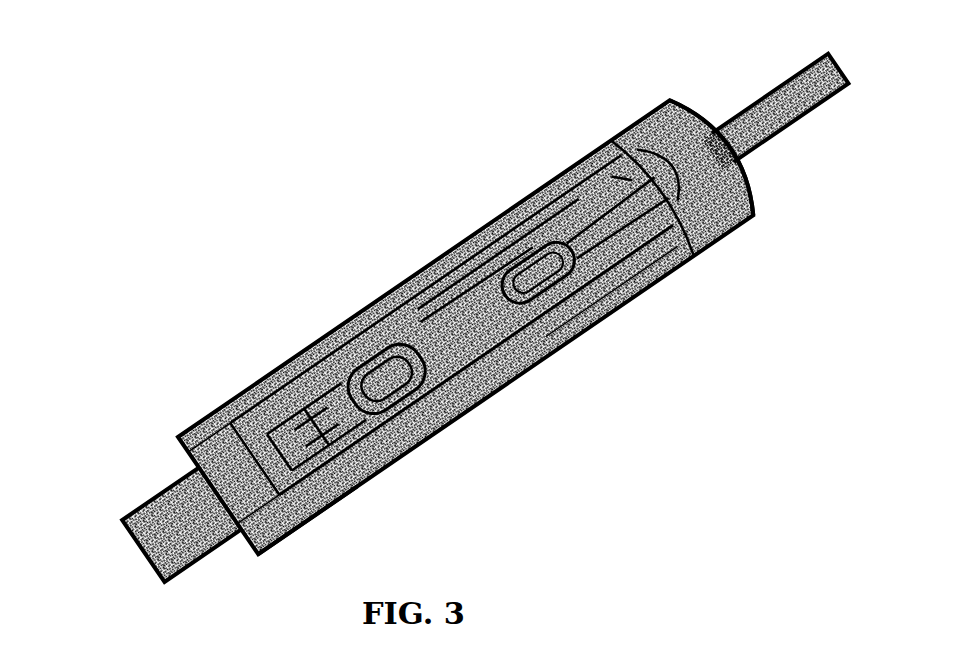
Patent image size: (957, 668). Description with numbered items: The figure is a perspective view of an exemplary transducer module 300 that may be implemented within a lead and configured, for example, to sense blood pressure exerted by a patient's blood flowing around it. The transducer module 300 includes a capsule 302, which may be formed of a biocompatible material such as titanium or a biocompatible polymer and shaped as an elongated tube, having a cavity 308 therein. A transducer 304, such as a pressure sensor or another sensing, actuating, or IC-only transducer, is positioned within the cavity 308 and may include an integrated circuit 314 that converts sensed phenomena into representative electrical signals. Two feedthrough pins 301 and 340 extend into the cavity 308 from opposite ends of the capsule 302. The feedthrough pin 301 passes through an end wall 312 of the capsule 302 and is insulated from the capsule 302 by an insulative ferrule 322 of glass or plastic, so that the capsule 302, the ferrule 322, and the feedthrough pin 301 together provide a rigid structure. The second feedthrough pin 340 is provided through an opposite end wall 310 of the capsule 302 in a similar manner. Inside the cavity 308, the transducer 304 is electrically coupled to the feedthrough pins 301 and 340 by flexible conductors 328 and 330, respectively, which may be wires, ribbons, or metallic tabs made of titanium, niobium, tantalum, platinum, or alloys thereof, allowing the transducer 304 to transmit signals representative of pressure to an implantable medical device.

The transducer module 300 is at (467, 334).
The feedthrough pin 301 is at (758, 100).
The capsule 302 is at (200, 420).
The transducer 304 is at (380, 298).
The cavity 308 is at (474, 255).
The opposite end wall 310 is at (254, 551).
The end wall 312 is at (706, 108).
The integrated circuit 314 is at (520, 335).
The insulative ferrule 322 is at (755, 202).
The conductor 328 is at (560, 195).
The conductor 330 is at (307, 350).
The second feedthrough pin 340 is at (153, 502).